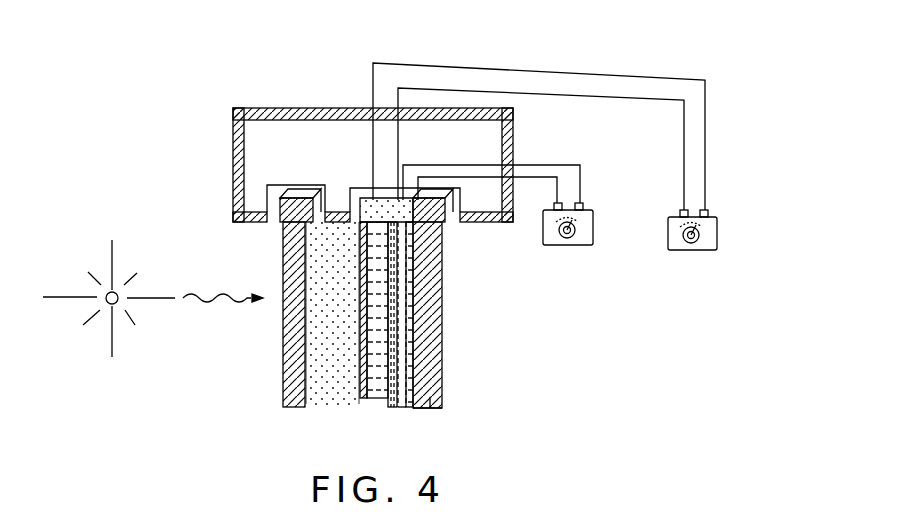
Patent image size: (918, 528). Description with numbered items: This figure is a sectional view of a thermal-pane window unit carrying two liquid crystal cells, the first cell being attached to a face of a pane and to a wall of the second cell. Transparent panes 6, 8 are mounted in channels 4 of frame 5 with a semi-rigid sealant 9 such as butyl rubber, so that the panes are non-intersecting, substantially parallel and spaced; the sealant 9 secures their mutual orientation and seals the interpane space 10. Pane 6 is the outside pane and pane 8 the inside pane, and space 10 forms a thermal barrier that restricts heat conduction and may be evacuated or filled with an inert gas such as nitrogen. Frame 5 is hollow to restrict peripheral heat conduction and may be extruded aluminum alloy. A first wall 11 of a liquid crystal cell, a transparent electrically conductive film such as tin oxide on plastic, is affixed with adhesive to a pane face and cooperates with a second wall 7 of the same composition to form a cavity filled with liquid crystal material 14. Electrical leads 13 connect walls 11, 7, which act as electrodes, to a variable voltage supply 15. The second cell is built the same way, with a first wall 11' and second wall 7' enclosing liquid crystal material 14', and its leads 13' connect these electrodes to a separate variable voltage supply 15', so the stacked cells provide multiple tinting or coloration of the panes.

The channels 4 is at (357, 187).
The frame 5 is at (237, 140).
The transparent pane 6 is at (278, 385).
The second wall 7 is at (436, 314).
The second wall 7' is at (353, 310).
The transparent pane 8 is at (430, 397).
The semi-rigid sealant 9 is at (280, 222).
The space 10 is at (340, 380).
The first wall 11 is at (394, 339).
The first wall 11' is at (360, 314).
The electrical leads 13 is at (492, 162).
The electrical leads 13' is at (553, 120).
The liquid crystal material 14 is at (443, 315).
The liquid crystal material 14' is at (343, 310).
The variable voltage supply 15 is at (568, 245).
The variable voltage supply 15' is at (684, 250).